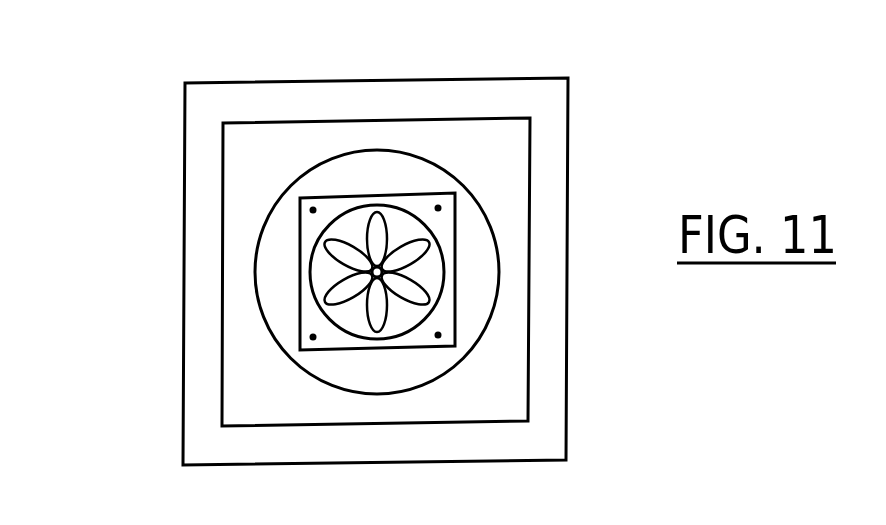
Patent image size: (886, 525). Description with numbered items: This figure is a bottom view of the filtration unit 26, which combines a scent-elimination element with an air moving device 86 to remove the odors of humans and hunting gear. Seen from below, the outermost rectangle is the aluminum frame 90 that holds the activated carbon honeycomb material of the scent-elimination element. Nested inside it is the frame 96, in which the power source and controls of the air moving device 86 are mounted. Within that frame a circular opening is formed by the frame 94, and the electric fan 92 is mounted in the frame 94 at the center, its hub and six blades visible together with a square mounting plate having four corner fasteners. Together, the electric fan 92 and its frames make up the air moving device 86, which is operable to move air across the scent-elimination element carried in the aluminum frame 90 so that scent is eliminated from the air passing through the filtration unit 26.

The filtration unit 26 is at (600, 133).
The aluminum frame 90 is at (302, 78).
The frame 96 is at (222, 158).
The air moving device 86 is at (238, 297).
The frame 94 is at (265, 220).
The electric fan 92 is at (302, 263).